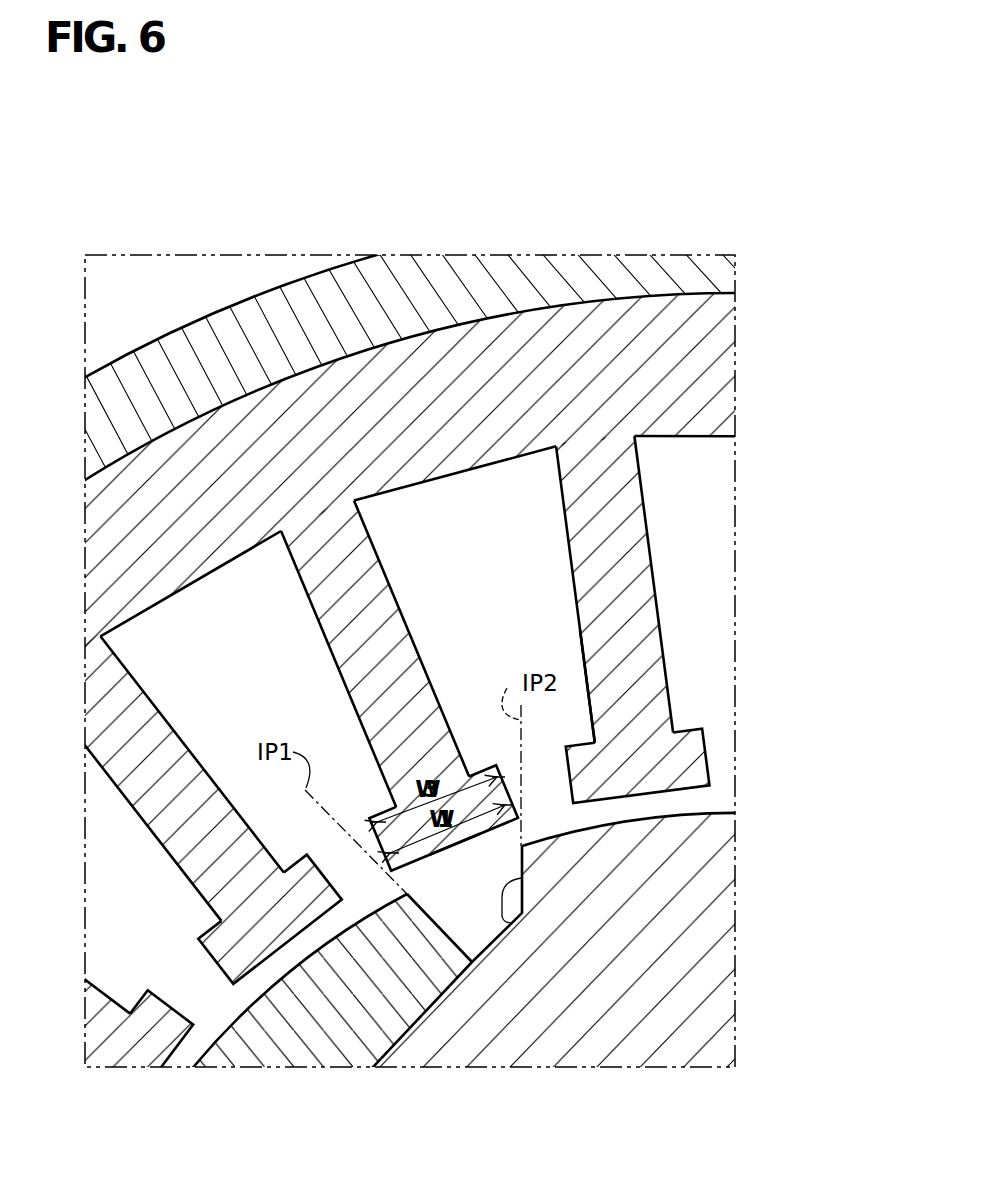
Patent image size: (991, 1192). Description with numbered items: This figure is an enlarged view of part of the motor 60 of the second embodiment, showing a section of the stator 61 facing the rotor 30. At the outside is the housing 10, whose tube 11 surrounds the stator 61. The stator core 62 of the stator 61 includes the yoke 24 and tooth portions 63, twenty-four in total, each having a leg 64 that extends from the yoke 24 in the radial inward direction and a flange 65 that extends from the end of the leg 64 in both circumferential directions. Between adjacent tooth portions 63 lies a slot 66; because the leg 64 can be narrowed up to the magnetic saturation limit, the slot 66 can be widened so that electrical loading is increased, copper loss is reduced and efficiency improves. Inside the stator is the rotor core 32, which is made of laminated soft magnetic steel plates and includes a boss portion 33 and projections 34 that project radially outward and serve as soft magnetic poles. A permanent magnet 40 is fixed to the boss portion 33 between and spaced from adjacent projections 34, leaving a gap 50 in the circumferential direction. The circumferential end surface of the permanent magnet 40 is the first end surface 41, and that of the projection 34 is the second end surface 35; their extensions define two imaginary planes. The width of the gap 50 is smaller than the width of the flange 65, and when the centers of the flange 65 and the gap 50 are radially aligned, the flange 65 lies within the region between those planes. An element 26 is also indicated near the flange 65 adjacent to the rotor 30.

The housing 10 is at (170, 333).
The tube 11 is at (125, 365).
The motor 60 is at (213, 222).
The stator core 62 is at (387, 176).
The yoke 24 is at (302, 427).
The tooth portion 63 is at (408, 213).
The leg 64 is at (383, 595).
The flange 65 is at (493, 767).
The slot 66 is at (510, 507).
The stator 61 is at (664, 641).
The rotor 30 is at (714, 812).
The rotor core 32 is at (822, 828).
The boss portion 33 is at (713, 988).
The projections 34 is at (722, 843).
The permanent magnet 40 is at (310, 1025).
The gap 50 is at (503, 923).
The second end surface 35 is at (478, 908).
The first end surface 41 is at (481, 908).
The tooth tip inner surface 26 is at (457, 838).